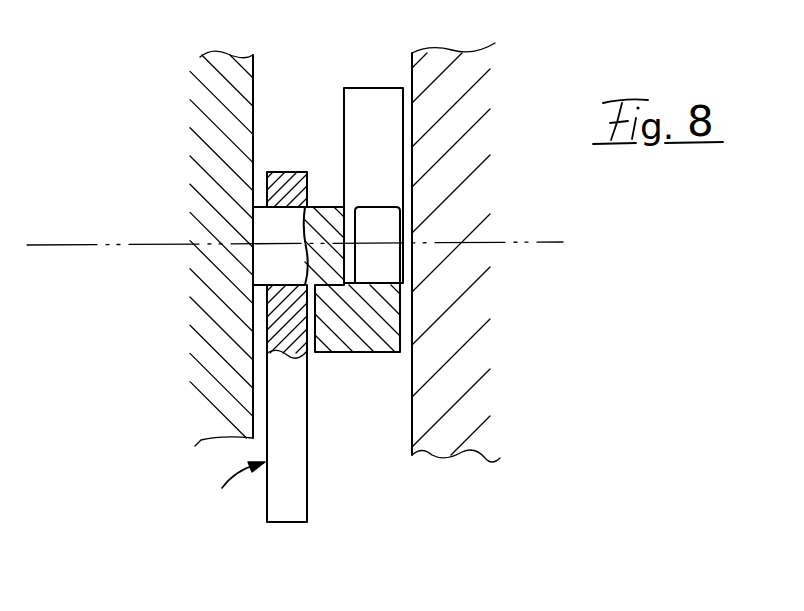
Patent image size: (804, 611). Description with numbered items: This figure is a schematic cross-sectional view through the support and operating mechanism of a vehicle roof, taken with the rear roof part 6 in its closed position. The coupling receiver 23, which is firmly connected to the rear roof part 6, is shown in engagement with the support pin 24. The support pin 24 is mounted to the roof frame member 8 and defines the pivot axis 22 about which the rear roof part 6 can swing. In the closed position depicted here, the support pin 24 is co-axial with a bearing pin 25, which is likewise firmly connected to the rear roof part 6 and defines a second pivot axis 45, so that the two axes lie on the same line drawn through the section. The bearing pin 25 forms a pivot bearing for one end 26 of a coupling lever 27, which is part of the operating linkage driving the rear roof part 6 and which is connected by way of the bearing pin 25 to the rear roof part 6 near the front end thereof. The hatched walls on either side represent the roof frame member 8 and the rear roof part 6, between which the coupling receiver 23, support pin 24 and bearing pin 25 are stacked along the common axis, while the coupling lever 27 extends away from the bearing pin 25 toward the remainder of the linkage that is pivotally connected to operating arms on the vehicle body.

The rear roof part 6 is at (210, 87).
The roof frame member 8 is at (470, 354).
The pivot axis 22 is at (559, 218).
The coupling receiver 23 is at (362, 105).
The support pin 24 is at (383, 225).
The bearing pin 25 is at (274, 259).
The end of coupling lever 26 is at (293, 378).
The coupling lever 27 is at (226, 495).
The pivot axis 45 is at (60, 244).